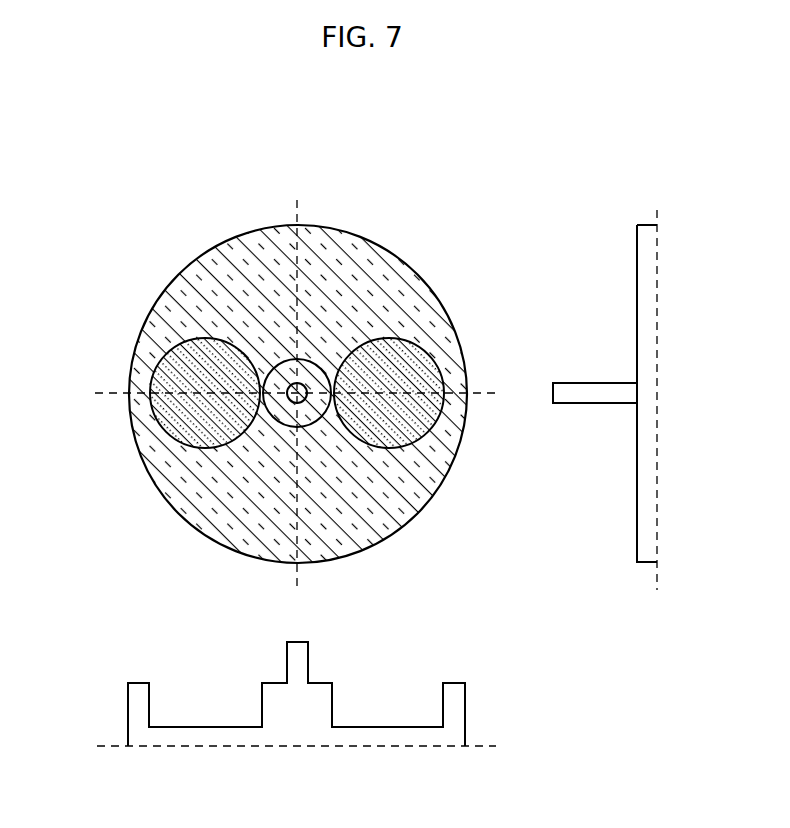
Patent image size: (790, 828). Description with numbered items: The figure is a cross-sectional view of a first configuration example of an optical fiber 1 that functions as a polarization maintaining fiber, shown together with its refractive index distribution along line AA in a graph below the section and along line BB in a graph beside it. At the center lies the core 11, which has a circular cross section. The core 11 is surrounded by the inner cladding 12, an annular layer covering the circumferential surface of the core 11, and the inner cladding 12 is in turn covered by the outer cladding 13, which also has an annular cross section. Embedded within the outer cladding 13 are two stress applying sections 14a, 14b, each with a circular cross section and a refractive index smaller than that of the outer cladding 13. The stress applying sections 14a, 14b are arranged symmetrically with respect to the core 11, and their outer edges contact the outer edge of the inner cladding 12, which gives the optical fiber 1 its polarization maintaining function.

The optical fiber 1 is at (372, 461).
The core 11 is at (301, 401).
The inner cladding 12 is at (295, 401).
The outer cladding 13 is at (443, 478).
The stress applying section 14a is at (205, 337).
The stress applying section 14b is at (390, 337).